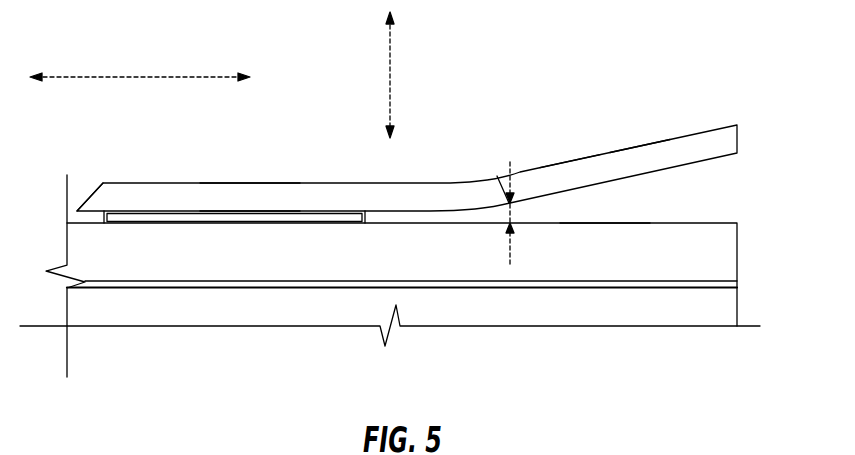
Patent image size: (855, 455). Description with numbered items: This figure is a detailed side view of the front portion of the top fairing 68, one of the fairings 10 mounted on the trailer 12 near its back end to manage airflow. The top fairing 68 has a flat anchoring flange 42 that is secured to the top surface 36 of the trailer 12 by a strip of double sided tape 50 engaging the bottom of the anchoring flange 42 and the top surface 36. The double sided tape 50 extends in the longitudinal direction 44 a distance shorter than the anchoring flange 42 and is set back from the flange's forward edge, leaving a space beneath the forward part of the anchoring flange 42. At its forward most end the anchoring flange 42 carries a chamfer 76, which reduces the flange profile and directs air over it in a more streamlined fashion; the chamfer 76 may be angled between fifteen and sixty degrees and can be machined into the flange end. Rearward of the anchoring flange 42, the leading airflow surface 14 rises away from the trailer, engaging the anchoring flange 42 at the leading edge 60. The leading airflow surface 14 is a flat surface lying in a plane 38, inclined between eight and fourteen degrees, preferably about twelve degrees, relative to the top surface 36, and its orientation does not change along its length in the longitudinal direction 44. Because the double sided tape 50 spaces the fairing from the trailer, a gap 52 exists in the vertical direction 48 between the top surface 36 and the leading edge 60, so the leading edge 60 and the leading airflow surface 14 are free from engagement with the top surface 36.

The fairing 10 is at (447, 161).
The top fairing 68 is at (718, 140).
The trailer 12 is at (722, 240).
The leading airflow surface 14 is at (568, 148).
The top surface 36 is at (602, 214).
The plane 38 is at (637, 135).
The anchoring flange 42 is at (253, 199).
The longitudinal direction 44 is at (140, 76).
The vertical direction 48 is at (390, 75).
The double sided tape 50 is at (168, 221).
The gap 52 is at (512, 242).
The leading edge 60 is at (488, 190).
The chamfer 76 is at (80, 197).